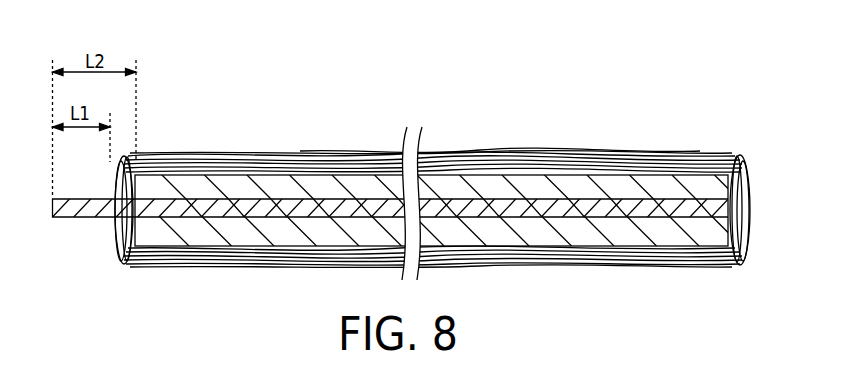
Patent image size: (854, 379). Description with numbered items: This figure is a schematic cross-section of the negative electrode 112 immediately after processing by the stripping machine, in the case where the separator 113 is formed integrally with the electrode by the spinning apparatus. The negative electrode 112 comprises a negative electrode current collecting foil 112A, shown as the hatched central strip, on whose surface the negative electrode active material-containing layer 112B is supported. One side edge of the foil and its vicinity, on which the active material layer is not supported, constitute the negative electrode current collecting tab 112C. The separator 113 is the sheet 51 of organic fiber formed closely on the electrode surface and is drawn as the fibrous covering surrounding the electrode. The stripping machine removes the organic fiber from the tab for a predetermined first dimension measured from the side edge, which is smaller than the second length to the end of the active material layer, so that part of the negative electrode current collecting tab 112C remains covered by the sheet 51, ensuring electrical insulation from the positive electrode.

The negative electrode 112 is at (438, 164).
The negative electrode current collecting foil 112A is at (306, 196).
The negative electrode active material-containing layer 112B is at (490, 188).
The negative electrode current collecting tab 112C is at (90, 216).
The separator 113 is at (432, 179).
The sheet 51 is at (500, 150).